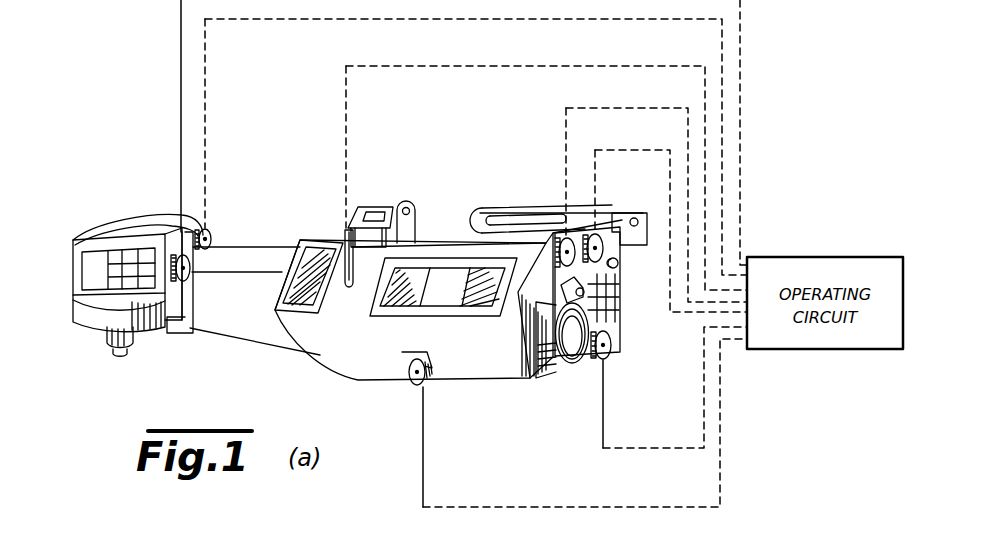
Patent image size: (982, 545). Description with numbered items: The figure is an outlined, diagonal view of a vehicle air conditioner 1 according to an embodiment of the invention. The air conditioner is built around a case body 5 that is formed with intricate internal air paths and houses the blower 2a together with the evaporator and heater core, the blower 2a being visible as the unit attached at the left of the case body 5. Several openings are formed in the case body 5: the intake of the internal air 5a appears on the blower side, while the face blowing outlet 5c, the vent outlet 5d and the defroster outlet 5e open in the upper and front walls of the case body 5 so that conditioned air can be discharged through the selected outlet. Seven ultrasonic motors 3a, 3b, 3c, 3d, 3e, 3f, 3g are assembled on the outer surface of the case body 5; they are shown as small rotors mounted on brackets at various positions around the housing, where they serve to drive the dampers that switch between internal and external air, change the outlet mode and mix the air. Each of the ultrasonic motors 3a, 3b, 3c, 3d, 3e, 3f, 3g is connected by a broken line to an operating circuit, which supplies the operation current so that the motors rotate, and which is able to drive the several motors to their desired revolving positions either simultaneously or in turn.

The vehicle air conditioner 1 is at (146, 176).
The blower 2a is at (113, 341).
The ultrasonic motor 3a is at (211, 232).
The ultrasonic motor 3b is at (187, 335).
The ultrasonic motor 3c is at (344, 230).
The ultrasonic motor 3d is at (562, 242).
The ultrasonic motor 3e is at (599, 248).
The ultrasonic motor 3f is at (608, 350).
The ultrasonic motor 3g is at (428, 385).
The case body 5 is at (362, 365).
The intake of the internal air 5a is at (120, 260).
The face blowing outlet 5c is at (372, 206).
The vent outlet 5d is at (293, 246).
The defroster outlet 5e is at (493, 215).